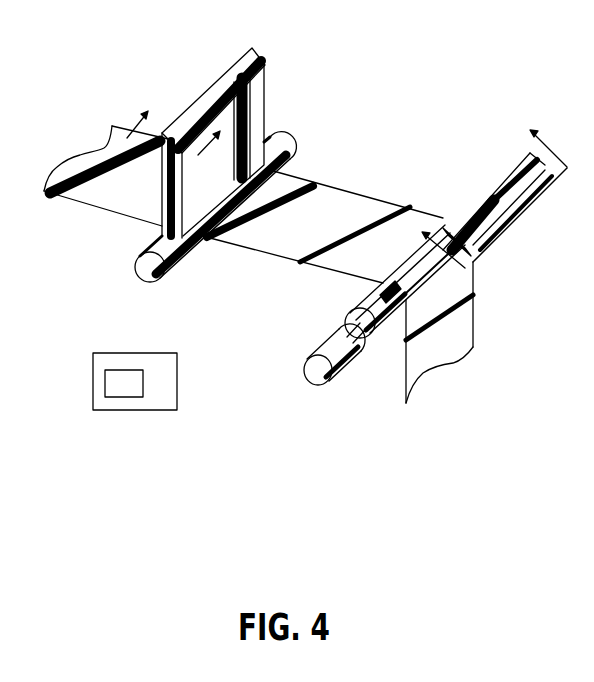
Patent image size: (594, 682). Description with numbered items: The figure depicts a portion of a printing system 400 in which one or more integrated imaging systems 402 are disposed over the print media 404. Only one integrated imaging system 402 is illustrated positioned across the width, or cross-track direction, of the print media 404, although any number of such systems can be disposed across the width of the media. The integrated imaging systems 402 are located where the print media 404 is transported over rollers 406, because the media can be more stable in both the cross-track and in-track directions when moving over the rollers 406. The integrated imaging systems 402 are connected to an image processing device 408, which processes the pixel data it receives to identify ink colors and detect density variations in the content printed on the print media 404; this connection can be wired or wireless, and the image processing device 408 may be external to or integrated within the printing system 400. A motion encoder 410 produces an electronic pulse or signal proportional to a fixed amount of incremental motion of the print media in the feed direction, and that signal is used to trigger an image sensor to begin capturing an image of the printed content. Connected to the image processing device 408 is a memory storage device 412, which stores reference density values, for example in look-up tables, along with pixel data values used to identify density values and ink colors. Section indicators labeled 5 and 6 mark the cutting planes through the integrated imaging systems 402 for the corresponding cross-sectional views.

The printing system 400 is at (397, 88).
The integrated imaging system 402 is at (252, 50).
The print media 404 is at (355, 193).
The rollers 406 is at (133, 276).
The image processing device 408 is at (130, 353).
The motion encoder 410 is at (302, 357).
The memory storage device 412 is at (107, 381).
The section line 5- 5 is at (178, 125).
The section line 6- 6 is at (486, 192).